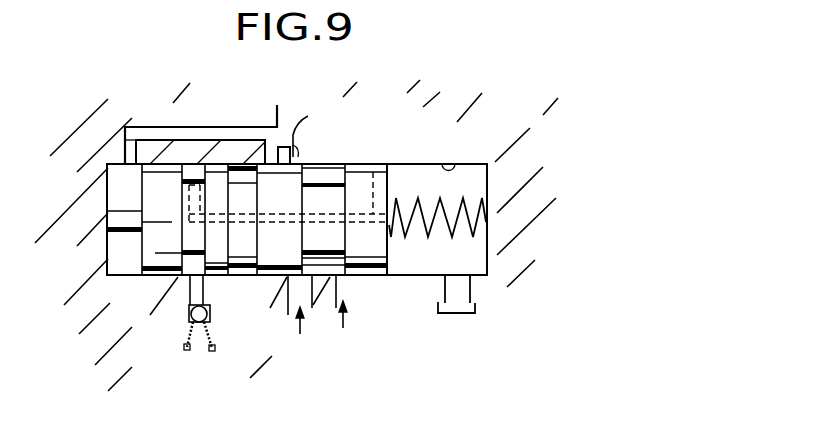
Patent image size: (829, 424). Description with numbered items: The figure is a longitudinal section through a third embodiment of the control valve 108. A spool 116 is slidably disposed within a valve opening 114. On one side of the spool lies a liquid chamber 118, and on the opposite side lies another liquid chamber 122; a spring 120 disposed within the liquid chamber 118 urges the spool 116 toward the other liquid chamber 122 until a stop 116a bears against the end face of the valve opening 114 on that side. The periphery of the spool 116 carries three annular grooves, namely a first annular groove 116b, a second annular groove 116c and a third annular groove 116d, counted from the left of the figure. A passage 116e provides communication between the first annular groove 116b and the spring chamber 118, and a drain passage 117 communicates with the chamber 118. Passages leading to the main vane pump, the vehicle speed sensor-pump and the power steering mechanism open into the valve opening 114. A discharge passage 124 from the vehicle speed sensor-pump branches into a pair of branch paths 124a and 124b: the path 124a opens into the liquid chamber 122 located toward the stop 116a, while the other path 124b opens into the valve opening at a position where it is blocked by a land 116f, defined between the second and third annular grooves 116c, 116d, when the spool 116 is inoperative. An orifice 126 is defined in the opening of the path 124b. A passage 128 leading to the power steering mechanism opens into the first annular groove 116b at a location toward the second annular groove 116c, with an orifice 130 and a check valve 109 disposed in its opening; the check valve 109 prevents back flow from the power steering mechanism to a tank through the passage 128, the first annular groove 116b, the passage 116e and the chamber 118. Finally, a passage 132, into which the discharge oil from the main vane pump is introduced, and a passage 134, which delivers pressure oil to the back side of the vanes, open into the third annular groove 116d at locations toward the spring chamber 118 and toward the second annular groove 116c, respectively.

The control valve 108 is at (538, 127).
The check valve 109 is at (186, 350).
The valve opening 114 is at (452, 163).
The spool 116 is at (158, 250).
The stop 116a is at (108, 222).
The first annular groove 116b is at (236, 302).
The second annular groove 116c is at (253, 339).
The third annular groove 116d is at (435, 275).
The passage 116e is at (385, 164).
The land 116f is at (300, 200).
The drain passage 117 is at (472, 288).
The liquid chamber 118 is at (437, 235).
The spring 120 is at (470, 203).
The liquid chamber 122 is at (120, 190).
The discharge passage 124 is at (279, 108).
The branch path 124a is at (163, 126).
The branch path 124b is at (272, 140).
The orifice 126 is at (309, 124).
The passage 128 is at (192, 350).
The orifice 130 is at (183, 310).
The passage 132 is at (358, 286).
The passage 134 is at (312, 284).